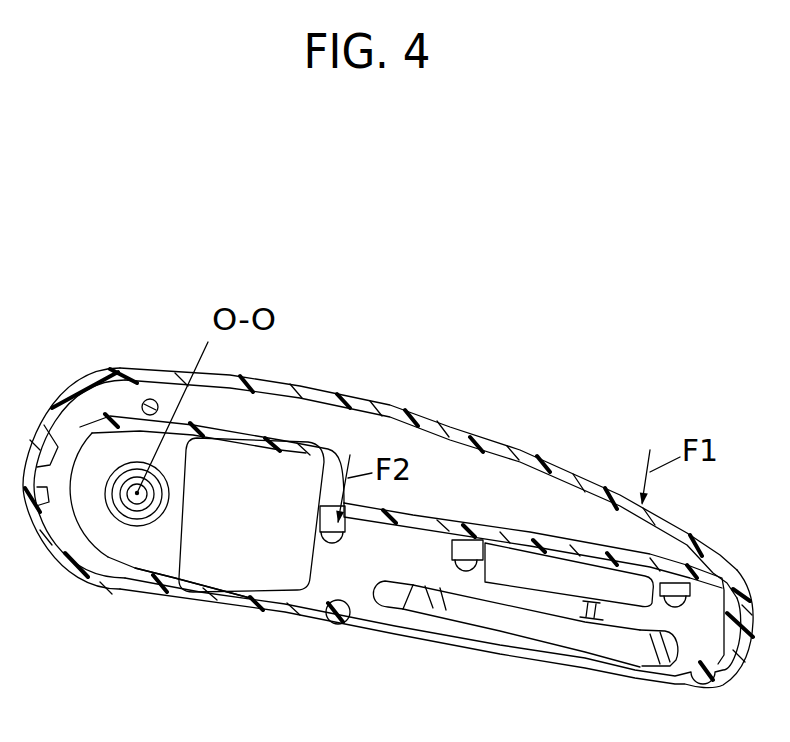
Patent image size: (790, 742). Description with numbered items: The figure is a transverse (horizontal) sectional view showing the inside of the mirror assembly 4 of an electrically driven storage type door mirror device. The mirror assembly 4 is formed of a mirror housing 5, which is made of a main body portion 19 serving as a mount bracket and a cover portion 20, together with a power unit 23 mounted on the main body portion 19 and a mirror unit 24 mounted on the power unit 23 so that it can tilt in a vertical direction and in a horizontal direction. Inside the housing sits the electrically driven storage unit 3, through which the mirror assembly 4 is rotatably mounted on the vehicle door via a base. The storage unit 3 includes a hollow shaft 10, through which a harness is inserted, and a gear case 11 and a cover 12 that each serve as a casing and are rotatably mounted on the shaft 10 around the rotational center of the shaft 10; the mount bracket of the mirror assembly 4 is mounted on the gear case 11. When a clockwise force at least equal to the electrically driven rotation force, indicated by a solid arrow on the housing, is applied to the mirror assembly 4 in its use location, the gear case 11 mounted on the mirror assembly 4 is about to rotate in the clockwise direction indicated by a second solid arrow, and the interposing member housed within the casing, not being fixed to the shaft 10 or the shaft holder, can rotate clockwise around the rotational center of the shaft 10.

The electrically driven storage unit 3 is at (155, 575).
The mirror assembly 4 is at (480, 423).
The mirror housing 5 is at (358, 322).
The shaft 10 is at (130, 518).
The gear case 11 is at (200, 575).
The cover 12 is at (200, 575).
The main body portion (mount bracket) 19 is at (413, 520).
The cover portion 20 is at (357, 405).
The power unit 23 is at (552, 568).
The mirror unit 24 is at (472, 618).